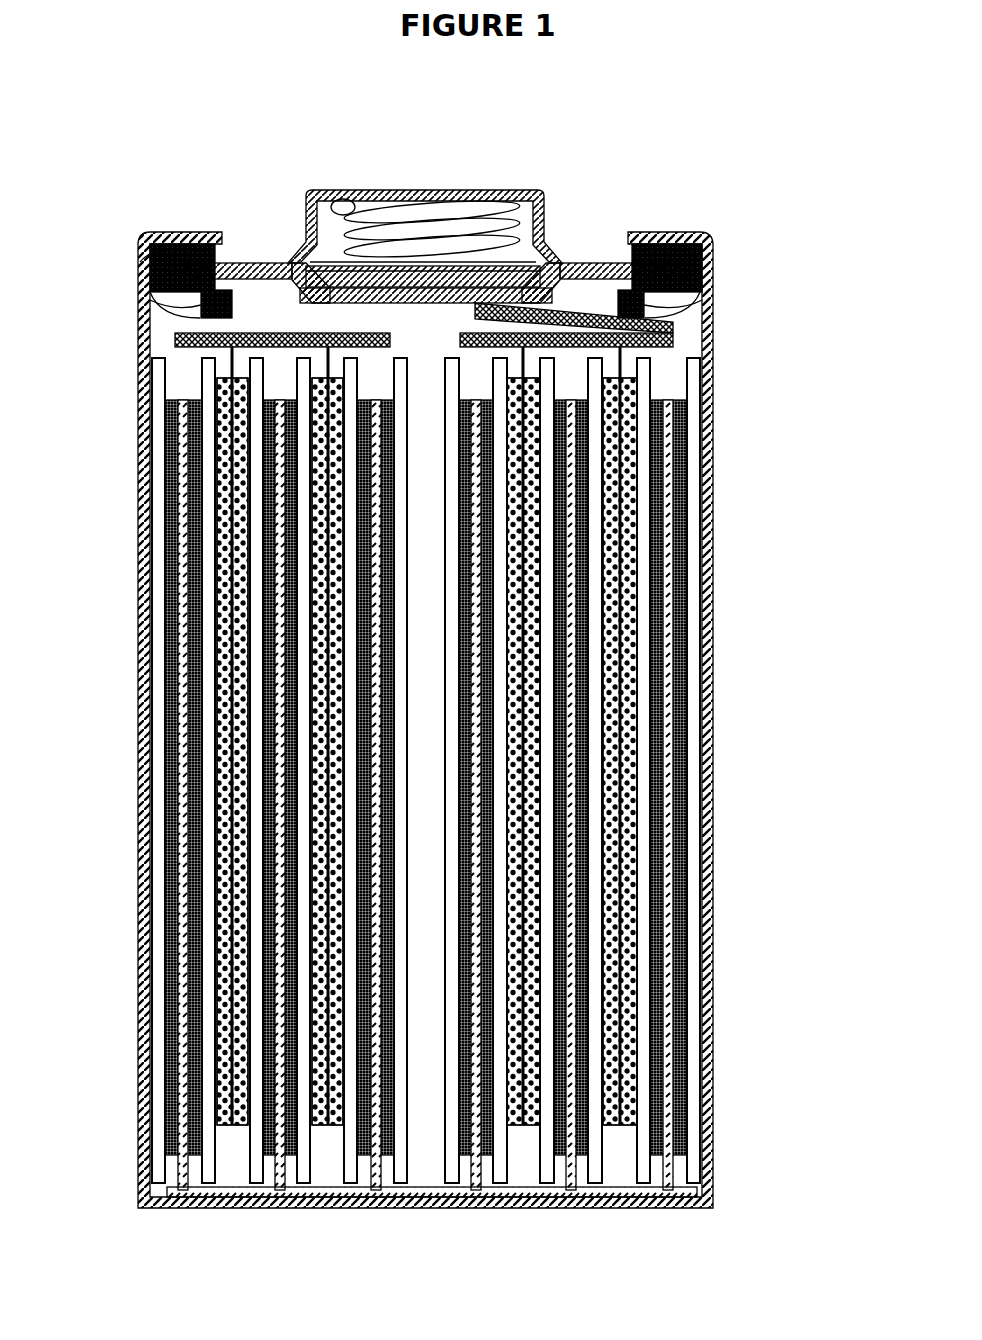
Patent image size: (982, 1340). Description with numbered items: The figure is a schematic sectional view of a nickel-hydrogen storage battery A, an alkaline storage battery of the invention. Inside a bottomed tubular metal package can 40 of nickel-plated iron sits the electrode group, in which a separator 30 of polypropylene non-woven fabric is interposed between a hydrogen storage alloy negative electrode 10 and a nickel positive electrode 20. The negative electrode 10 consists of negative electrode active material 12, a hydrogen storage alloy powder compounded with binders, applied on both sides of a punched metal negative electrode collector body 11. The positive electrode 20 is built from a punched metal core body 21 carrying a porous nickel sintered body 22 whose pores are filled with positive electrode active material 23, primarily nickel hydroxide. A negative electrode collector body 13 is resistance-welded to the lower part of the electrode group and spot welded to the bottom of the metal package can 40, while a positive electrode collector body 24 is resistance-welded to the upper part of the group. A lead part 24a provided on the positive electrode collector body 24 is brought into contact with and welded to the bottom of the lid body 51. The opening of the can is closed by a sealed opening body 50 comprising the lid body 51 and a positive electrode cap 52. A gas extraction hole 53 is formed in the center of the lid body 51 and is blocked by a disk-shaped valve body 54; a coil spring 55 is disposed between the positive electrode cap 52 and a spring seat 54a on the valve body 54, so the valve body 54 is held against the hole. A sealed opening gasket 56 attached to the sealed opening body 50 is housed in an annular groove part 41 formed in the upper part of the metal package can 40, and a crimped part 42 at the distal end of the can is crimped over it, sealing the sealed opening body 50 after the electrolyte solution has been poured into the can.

The hydrogen storage alloy negative electrode 10 is at (518, 843).
The negative electrode collector body 11 is at (673, 1007).
The negative electrode active material 12 is at (672, 1105).
The negative electrode collector body 13 is at (522, 1192).
The nickel positive electrode 20 is at (532, 736).
The core body 21 is at (620, 425).
The nickel sintered body 22 is at (627, 497).
The positive electrode active material 23 is at (630, 545).
The positive electrode collector body 24 is at (188, 328).
The lead part 24a is at (580, 270).
The separator 30 is at (697, 730).
The metal package can 40 is at (705, 892).
The annular groove part 41 is at (700, 287).
The crimped part 42 is at (663, 233).
The sealed opening body 50 is at (387, 205).
The lid body 51 is at (245, 267).
The positive electrode cap 52 is at (523, 217).
The gas extraction hole 53 is at (392, 268).
The valve body 54 is at (460, 280).
The spring seat 54a is at (386, 200).
The coil spring 55 is at (420, 215).
The sealed opening gasket 56 is at (142, 262).
The nickel-hydrogen storage battery A is at (387, 189).